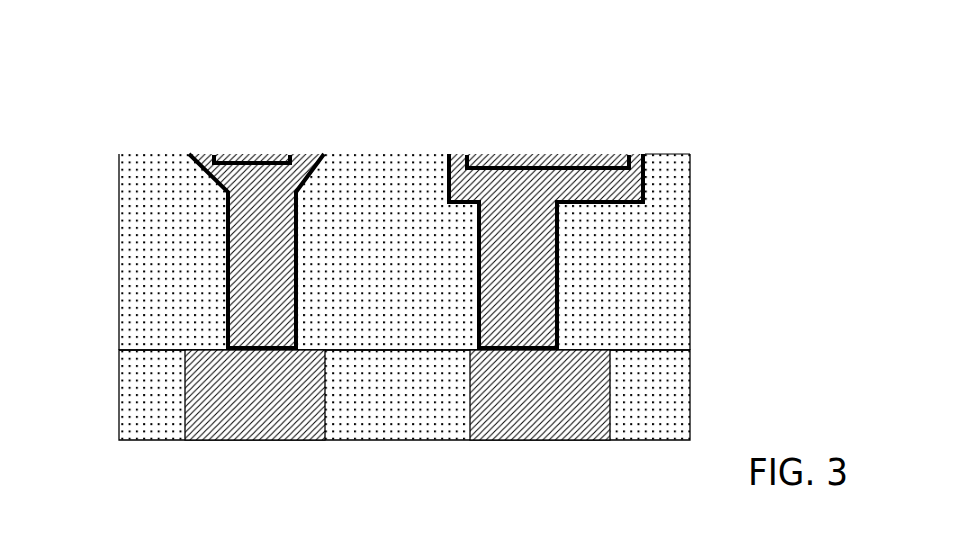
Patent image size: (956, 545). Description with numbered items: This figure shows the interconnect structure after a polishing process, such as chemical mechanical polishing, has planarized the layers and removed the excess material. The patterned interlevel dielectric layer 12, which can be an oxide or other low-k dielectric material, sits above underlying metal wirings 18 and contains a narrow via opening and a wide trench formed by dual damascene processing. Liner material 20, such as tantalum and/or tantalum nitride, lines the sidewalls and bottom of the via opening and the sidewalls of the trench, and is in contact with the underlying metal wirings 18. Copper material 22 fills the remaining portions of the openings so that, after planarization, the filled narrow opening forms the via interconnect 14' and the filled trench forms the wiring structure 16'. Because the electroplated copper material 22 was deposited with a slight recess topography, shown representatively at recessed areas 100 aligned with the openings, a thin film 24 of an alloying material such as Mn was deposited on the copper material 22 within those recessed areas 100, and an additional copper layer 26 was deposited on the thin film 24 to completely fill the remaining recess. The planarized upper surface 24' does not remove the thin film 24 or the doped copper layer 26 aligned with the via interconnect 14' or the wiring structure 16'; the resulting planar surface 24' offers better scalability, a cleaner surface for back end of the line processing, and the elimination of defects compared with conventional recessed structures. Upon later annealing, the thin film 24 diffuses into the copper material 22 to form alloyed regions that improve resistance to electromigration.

The interlevel dielectric layer 12 is at (120, 333).
The via interconnect 14' is at (365, 252).
The wiring structure 16' is at (613, 236).
The underlying metal wirings 18 is at (495, 413).
The liner material 20 is at (560, 258).
The copper material 22 is at (248, 220).
The thin film 24 is at (224, 122).
The planarized upper surface 24' is at (702, 126).
The additional copper layer 26 is at (488, 146).
The recessed areas 100 is at (263, 146).